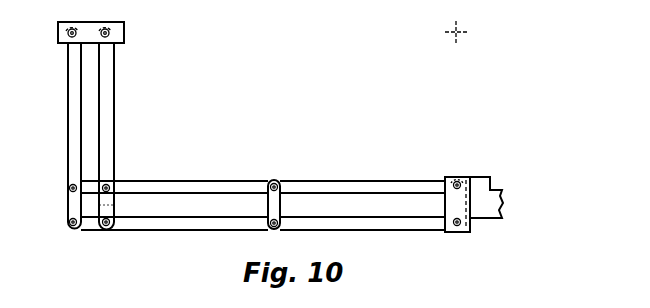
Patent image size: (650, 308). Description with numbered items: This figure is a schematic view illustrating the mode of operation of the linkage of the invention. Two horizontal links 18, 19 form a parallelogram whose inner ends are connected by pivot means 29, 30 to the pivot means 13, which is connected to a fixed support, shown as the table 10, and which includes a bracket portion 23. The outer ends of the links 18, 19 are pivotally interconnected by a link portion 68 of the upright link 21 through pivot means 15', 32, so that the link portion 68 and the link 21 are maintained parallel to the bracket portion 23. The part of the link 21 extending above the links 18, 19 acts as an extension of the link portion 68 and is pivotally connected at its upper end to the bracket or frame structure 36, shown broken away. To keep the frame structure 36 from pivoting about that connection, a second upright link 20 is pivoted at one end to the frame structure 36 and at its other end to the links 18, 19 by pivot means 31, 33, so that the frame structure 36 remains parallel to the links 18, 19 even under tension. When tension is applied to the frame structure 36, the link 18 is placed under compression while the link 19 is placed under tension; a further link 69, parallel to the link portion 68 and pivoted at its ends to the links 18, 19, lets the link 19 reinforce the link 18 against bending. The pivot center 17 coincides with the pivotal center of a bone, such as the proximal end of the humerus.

The table 10 is at (500, 212).
The pivot means 13 is at (470, 175).
The pivot means 15' is at (131, 173).
The pivot center 17 is at (468, 31).
The link 18 is at (338, 186).
The link 19 is at (335, 223).
The link 20 is at (70, 147).
The link 21 is at (110, 147).
The bracket portion 23 is at (445, 205).
The pivot means 29 is at (456, 182).
The pivot means 30 is at (457, 226).
The pivot means 31 is at (69, 190).
The pivot means 32 is at (108, 226).
The pivot means 33 is at (73, 228).
The bracket 36 is at (125, 36).
The link portion 68 is at (112, 208).
The link 69 is at (282, 205).